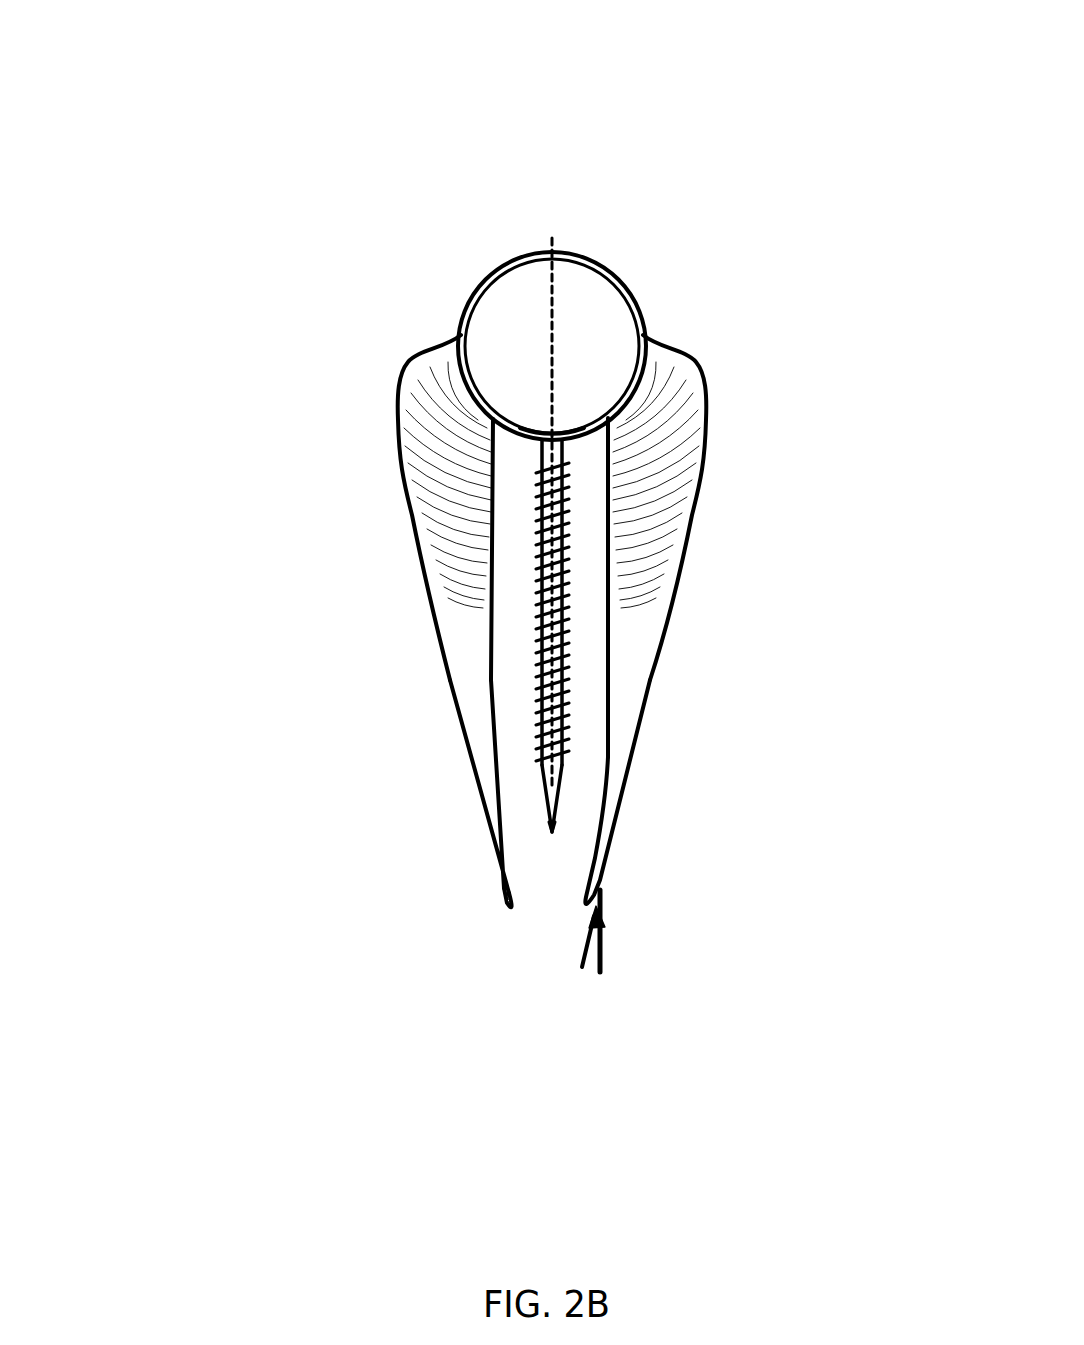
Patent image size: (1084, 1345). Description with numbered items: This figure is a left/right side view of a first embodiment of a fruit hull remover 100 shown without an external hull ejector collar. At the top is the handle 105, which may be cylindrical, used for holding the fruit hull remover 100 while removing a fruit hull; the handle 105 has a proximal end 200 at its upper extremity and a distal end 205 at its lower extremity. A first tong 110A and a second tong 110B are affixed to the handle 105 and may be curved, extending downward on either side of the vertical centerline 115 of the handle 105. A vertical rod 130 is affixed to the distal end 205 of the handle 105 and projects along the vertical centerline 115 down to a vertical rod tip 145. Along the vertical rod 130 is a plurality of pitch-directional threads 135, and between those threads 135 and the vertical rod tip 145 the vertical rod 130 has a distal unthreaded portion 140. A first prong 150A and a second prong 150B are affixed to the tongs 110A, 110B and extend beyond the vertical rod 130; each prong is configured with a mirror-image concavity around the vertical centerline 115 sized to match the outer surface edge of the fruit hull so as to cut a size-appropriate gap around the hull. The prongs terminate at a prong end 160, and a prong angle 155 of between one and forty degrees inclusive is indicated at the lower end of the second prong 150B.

The fruit hull remover 100 is at (498, 539).
The handle 105 is at (552, 346).
The first tong 110A is at (431, 461).
The second tong 110B is at (669, 488).
The vertical centerline 115 is at (555, 487).
The vertical rod 130 is at (521, 459).
The plurality of pitch-directional threads 135 is at (519, 559).
The distal unthreaded portion 140 is at (520, 784).
The vertical rod tip 145 is at (520, 816).
The first prong 150A is at (471, 856).
The second prong 150B is at (627, 863).
The prong angle 155 is at (594, 925).
The prong end 160 is at (482, 908).
The proximal end 200 is at (575, 265).
The distal end 205 is at (575, 436).